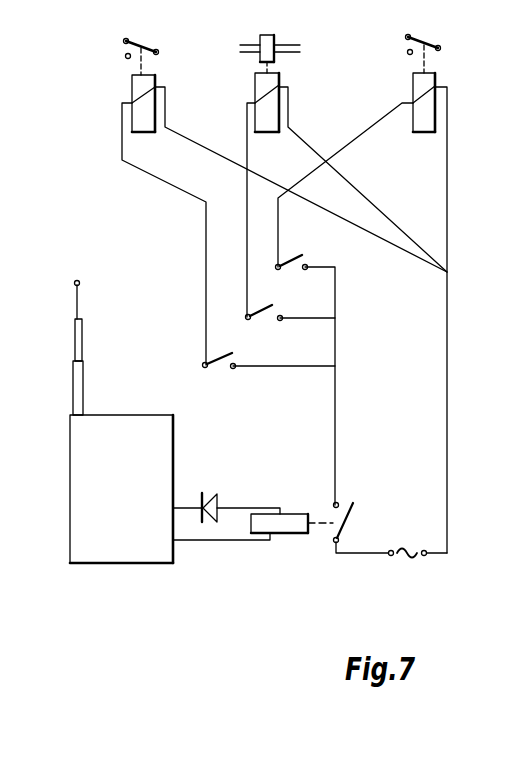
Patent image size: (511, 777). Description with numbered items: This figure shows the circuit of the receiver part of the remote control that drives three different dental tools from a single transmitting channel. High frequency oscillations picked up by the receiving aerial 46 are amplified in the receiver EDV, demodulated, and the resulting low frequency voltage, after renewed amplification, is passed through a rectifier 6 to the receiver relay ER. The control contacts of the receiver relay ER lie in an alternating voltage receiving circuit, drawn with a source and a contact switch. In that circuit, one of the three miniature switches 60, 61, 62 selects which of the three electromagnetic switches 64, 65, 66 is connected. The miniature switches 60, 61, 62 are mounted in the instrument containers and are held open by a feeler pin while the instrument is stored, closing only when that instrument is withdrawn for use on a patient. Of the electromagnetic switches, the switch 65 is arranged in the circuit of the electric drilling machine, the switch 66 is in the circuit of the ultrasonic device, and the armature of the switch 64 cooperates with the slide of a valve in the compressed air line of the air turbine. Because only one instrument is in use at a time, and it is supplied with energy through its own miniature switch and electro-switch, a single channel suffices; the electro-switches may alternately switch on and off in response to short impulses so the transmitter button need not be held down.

The electromagnetic switch 65 is at (122, 104).
The electromagnetic switch 64 is at (255, 103).
The electromagnetic switch 66 is at (435, 86).
The miniature switch 62 is at (299, 255).
The miniature switch 60 is at (268, 313).
The miniature switch 61 is at (222, 363).
The receiving aerial 46 is at (77, 377).
The rectifier 6 is at (217, 503).
The receiver EDV is at (108, 428).
The receiver relay ER is at (270, 532).